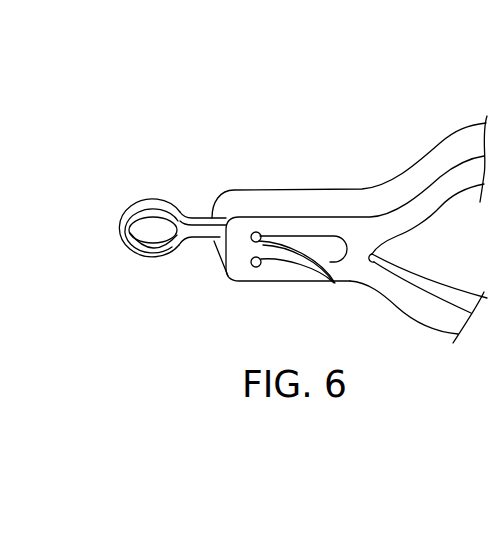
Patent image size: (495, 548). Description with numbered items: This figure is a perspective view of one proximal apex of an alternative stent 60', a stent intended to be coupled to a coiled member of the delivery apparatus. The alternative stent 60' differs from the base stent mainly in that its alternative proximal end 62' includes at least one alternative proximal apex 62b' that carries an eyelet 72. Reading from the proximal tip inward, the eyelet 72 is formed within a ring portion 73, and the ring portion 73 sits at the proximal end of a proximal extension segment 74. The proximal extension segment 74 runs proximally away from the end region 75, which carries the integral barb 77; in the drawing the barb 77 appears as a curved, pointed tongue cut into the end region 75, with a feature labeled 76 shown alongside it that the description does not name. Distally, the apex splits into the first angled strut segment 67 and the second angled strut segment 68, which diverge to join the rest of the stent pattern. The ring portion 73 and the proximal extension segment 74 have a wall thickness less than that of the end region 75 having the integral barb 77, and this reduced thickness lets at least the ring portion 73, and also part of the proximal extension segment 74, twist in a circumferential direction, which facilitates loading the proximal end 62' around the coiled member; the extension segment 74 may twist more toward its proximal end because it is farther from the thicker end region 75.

The alternative stent 60' is at (278, 219).
The alternative proximal end 62' is at (277, 213).
The alternative proximal apex 62b' is at (148, 208).
The first angled strut segment 67 is at (421, 305).
The second angled strut segment 68 is at (440, 186).
The eyelet 72 is at (151, 232).
The ring portion 73 is at (126, 240).
The proximal extension segment 74 is at (205, 231).
The end region 75 is at (236, 201).
The resilient tongue 76 is at (331, 246).
The integral barb 77 is at (313, 265).